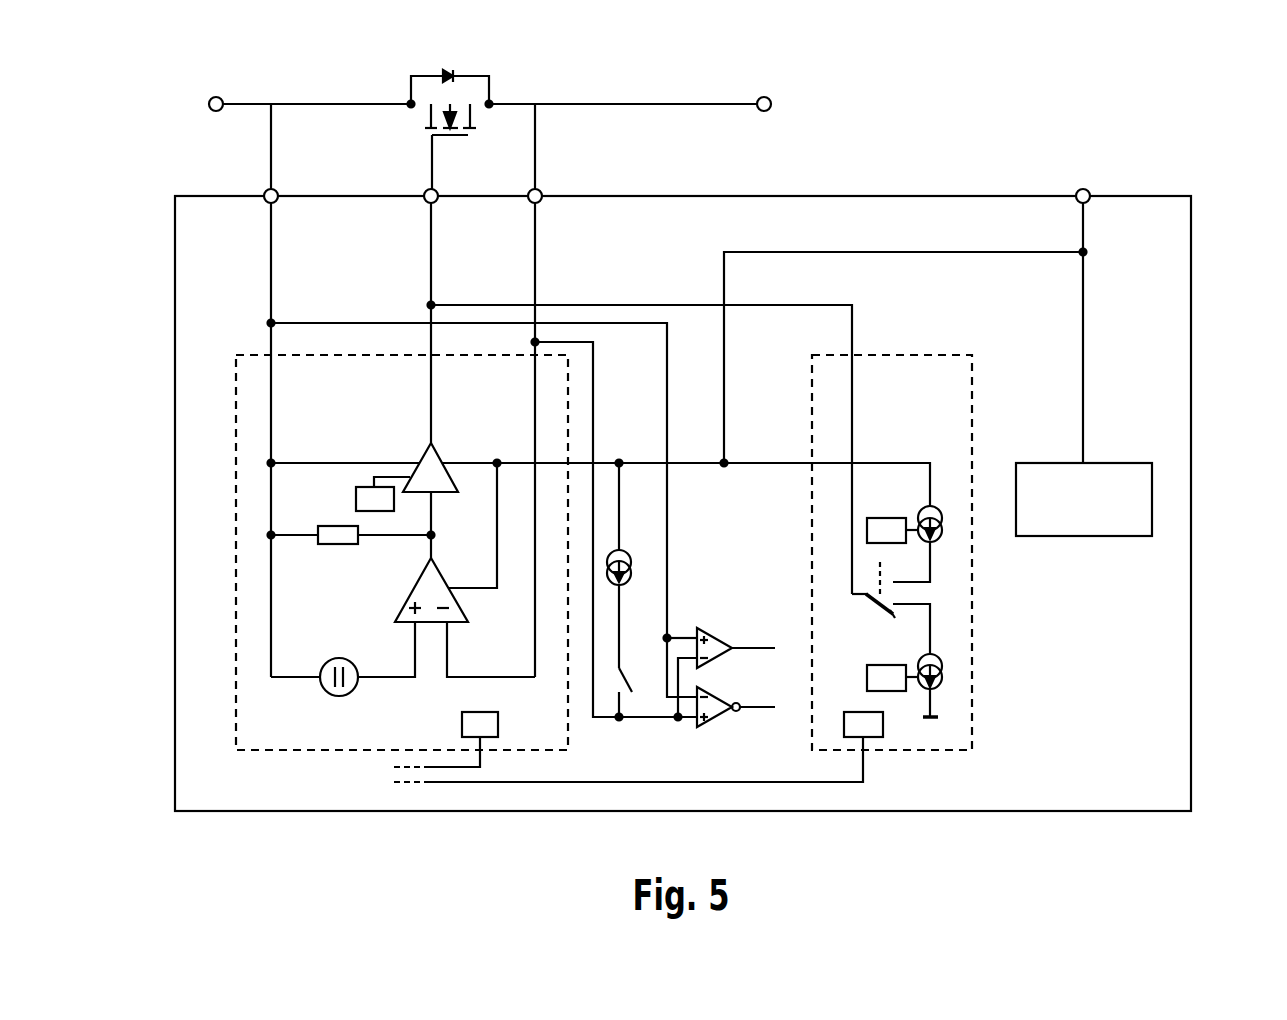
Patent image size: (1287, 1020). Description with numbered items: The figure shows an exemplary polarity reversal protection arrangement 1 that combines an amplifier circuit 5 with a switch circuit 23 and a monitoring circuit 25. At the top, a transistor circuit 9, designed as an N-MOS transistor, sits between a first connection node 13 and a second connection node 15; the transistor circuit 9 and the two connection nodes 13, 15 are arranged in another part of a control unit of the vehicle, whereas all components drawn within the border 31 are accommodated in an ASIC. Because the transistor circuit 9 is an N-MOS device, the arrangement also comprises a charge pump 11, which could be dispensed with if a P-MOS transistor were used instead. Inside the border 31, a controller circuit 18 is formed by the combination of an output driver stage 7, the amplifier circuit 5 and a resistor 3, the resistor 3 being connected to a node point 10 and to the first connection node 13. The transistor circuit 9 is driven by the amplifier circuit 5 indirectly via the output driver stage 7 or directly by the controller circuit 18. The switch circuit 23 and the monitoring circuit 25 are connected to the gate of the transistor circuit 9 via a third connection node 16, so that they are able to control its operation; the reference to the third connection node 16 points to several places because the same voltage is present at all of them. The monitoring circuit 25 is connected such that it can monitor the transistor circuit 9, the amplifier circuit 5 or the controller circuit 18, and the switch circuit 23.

The polarity reversal protection arrangement 1 is at (728, 435).
The resistor 3 is at (340, 526).
The amplifier circuit 5 is at (412, 578).
The output driver stage 7 is at (421, 457).
The transistor circuit 9 is at (446, 73).
The node point 10 is at (436, 535).
The charge pump 11 is at (1069, 514).
The first connection node 13 is at (216, 97).
The second connection node 15 is at (764, 97).
The third connection node 16 is at (445, 206).
The controller circuit 18 is at (495, 568).
The switch circuit 23 is at (972, 735).
The monitoring circuit 25 is at (780, 731).
The border 31 is at (1191, 420).